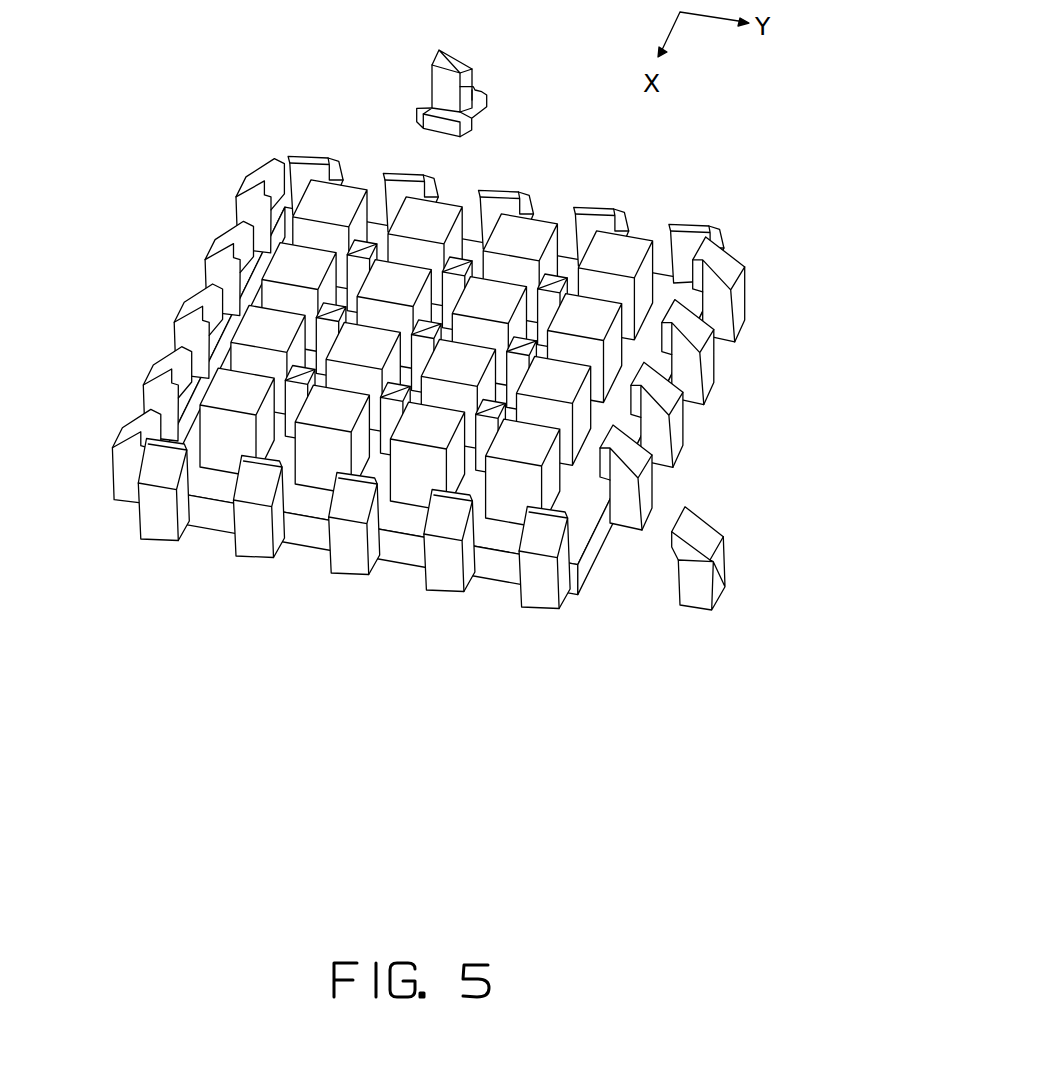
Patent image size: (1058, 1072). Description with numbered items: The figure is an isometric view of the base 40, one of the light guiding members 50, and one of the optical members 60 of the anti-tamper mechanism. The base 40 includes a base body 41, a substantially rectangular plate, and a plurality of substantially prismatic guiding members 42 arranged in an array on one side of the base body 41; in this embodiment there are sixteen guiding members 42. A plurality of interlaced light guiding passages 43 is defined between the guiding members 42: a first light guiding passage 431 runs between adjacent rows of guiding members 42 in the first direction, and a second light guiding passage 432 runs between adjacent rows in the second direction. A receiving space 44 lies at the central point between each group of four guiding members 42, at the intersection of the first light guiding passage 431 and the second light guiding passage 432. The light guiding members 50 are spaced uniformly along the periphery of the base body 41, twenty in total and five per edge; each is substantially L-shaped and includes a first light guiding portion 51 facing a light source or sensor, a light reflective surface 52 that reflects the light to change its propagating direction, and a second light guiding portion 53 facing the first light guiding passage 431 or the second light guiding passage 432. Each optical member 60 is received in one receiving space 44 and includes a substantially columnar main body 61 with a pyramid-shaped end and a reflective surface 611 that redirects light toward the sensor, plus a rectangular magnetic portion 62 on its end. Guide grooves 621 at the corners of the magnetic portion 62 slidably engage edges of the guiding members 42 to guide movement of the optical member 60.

The base 40 is at (246, 540).
The base body 41 is at (283, 235).
The guiding member 42 is at (318, 196).
The light guiding passage 43 is at (604, 237).
The first light guiding passage 431 is at (462, 283).
The second light guiding passage 432 is at (605, 288).
The receiving space 44 is at (346, 312).
The light guiding member 50 is at (700, 616).
The first light guiding portion 51 is at (698, 597).
The light reflective surface 52 is at (712, 540).
The second light guiding portion 53 is at (649, 607).
The optical member 60 is at (433, 101).
The main body 61 is at (458, 81).
The reflective surface 611 is at (462, 82).
The magnetic portion 62 is at (458, 118).
The guide groove 621 is at (476, 130).